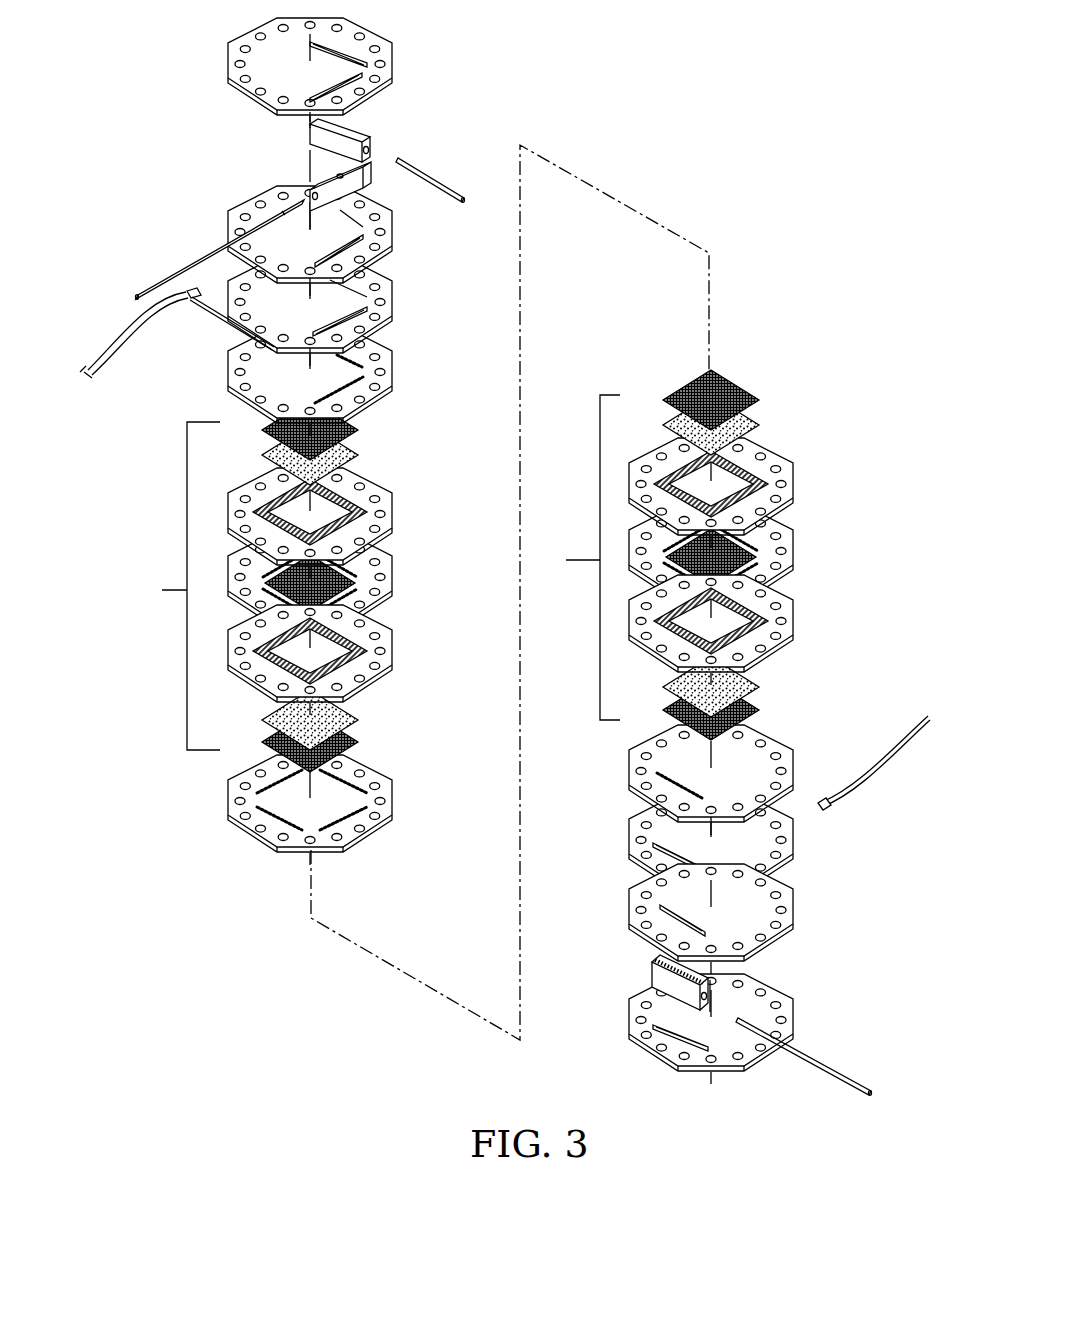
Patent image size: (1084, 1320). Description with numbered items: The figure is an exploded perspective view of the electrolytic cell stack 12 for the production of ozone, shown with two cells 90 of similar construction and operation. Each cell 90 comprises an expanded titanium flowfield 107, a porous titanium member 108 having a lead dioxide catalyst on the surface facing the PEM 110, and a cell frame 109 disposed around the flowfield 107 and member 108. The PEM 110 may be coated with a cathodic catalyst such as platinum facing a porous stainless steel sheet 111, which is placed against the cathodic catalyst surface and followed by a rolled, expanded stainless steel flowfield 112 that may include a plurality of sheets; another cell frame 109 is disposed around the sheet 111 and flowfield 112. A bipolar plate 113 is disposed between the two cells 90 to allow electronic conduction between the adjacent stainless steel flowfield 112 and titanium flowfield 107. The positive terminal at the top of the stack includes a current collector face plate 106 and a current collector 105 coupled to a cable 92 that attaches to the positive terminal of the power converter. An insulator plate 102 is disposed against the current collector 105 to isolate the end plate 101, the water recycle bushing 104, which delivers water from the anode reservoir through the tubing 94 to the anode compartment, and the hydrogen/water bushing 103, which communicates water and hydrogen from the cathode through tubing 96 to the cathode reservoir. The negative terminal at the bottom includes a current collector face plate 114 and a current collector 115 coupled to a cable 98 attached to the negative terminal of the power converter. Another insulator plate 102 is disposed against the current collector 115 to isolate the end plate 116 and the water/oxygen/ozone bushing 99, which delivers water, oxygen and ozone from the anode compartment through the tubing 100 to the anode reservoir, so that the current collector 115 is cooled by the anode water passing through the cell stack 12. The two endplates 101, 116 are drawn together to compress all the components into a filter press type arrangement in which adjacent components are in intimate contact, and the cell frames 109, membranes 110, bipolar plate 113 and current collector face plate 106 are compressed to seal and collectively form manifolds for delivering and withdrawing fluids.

The electrolytic cell stack 12 is at (117, 84).
The cell 90 is at (371, 572).
The cable 92 is at (110, 368).
The tubing 94 is at (427, 168).
The tubing 96 is at (143, 290).
The cable 98 is at (898, 742).
The water/oxygen/ozone bushing 99 is at (652, 968).
The tubing 100 is at (872, 1088).
The end plate 101 is at (388, 68).
The insulator plate 102 is at (390, 250).
The hydrogen/water bushing 103 is at (310, 187).
The water recycle bushing 104 is at (370, 137).
The current collector 105 is at (390, 305).
The current collector face plate 106 is at (390, 378).
The expanded titanium flowfield 107 is at (355, 427).
The porous titanium member 108 is at (355, 457).
The cell frame 109 is at (390, 520).
The PEM 110 is at (390, 588).
The porous stainless steel sheet 111 is at (355, 715).
The expanded stainless steel flowfield 112 is at (355, 740).
The bipolar plate 113 is at (392, 800).
The current collector face plate 114 is at (775, 744).
The current collector 115 is at (840, 836).
The end plate 116 is at (795, 1025).